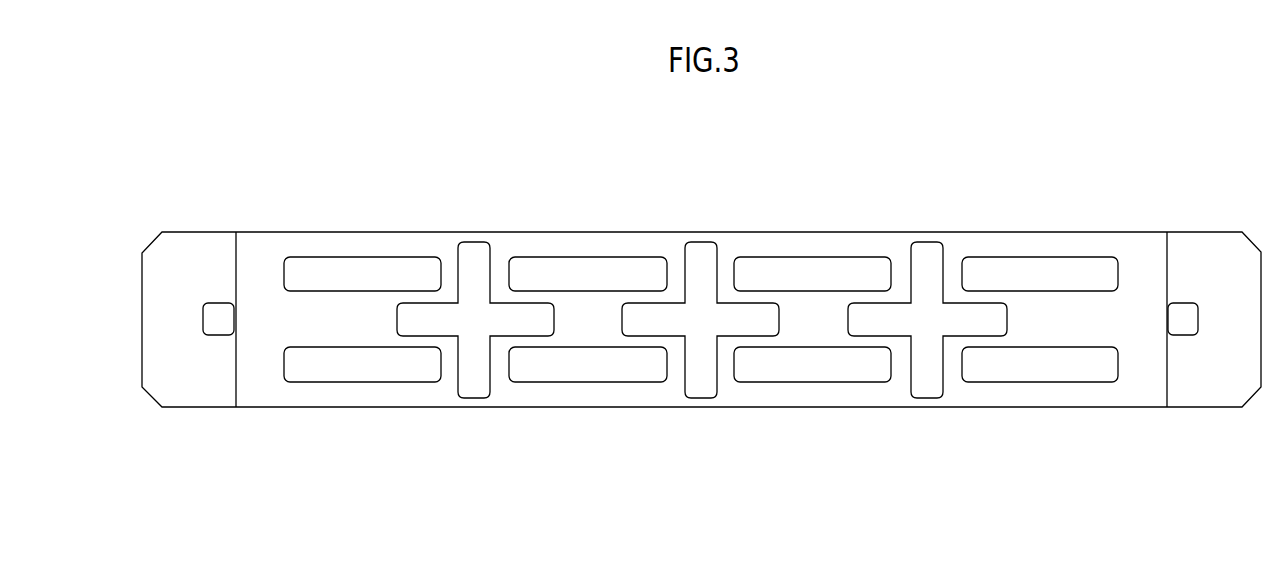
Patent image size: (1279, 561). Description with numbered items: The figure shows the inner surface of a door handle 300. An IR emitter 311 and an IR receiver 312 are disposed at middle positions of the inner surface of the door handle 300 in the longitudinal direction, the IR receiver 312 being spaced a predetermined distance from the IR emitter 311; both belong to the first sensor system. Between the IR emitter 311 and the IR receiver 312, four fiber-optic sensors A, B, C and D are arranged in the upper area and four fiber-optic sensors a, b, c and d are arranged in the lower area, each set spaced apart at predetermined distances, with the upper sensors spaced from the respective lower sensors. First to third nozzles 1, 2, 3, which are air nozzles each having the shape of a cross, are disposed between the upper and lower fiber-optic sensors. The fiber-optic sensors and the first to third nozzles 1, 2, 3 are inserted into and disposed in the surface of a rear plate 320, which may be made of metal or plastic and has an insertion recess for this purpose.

The door handle 300 is at (233, 162).
The IR emitter 311 is at (227, 322).
The IR receiver 312 is at (1175, 322).
The rear plate 320 is at (865, 397).
The first nozzle 1 is at (475, 320).
The second nozzle 2 is at (700, 320).
The third nozzle 3 is at (927, 320).